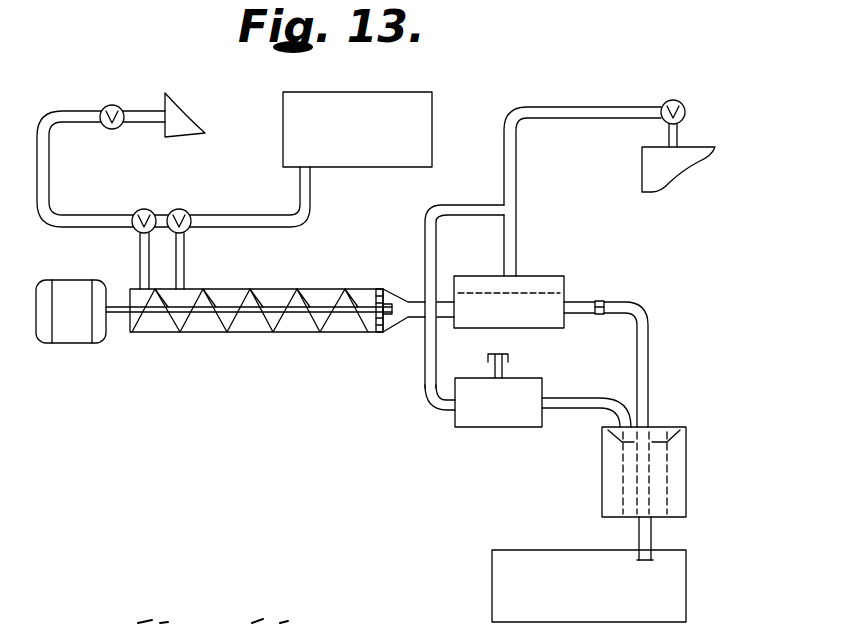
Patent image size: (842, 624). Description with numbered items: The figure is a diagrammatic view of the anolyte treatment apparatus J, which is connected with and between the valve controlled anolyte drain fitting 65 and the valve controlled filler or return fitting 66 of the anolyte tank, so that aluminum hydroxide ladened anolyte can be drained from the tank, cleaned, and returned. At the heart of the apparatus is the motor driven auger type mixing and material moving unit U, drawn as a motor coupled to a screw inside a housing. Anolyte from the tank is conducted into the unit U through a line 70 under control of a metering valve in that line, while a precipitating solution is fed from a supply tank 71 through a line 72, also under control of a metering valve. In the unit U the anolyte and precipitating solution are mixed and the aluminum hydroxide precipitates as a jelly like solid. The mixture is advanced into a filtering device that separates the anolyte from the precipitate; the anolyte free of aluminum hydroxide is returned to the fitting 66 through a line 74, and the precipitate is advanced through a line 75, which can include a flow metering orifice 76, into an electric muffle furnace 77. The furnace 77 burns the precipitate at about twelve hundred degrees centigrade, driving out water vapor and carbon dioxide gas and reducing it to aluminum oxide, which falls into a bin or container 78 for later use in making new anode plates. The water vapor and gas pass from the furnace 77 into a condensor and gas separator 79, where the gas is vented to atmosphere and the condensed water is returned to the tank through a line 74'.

The valve controlled anolyte drain fitting 65 is at (138, 112).
The valve controlled filler or return fitting 66 is at (712, 93).
The line 70 is at (357, 129).
The supply tank 71 is at (48, 168).
The line 72 is at (243, 232).
The line 74 is at (582, 191).
The line 74' is at (424, 307).
The line 75 is at (648, 357).
The flow metering orifice 76 is at (597, 300).
The electric muffle furnace 77 is at (602, 482).
The bin or container 78 is at (492, 573).
The condensor and gas separator 79 is at (547, 276).
The anolyte treatment apparatus J is at (166, 359).
The motor driven auger type mixing and material moving unit U is at (298, 340).